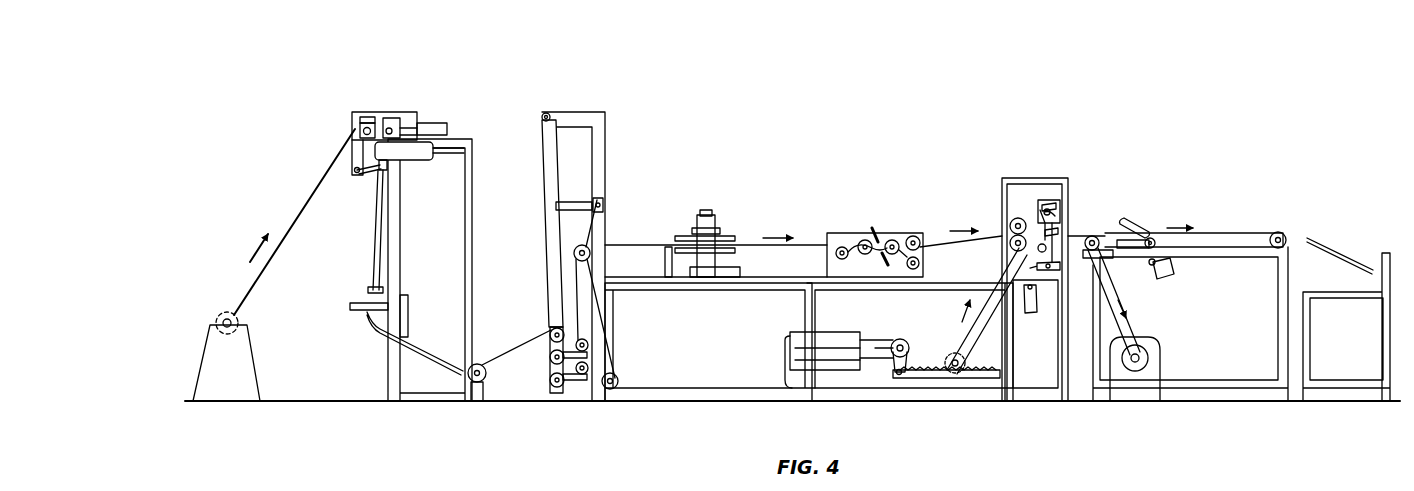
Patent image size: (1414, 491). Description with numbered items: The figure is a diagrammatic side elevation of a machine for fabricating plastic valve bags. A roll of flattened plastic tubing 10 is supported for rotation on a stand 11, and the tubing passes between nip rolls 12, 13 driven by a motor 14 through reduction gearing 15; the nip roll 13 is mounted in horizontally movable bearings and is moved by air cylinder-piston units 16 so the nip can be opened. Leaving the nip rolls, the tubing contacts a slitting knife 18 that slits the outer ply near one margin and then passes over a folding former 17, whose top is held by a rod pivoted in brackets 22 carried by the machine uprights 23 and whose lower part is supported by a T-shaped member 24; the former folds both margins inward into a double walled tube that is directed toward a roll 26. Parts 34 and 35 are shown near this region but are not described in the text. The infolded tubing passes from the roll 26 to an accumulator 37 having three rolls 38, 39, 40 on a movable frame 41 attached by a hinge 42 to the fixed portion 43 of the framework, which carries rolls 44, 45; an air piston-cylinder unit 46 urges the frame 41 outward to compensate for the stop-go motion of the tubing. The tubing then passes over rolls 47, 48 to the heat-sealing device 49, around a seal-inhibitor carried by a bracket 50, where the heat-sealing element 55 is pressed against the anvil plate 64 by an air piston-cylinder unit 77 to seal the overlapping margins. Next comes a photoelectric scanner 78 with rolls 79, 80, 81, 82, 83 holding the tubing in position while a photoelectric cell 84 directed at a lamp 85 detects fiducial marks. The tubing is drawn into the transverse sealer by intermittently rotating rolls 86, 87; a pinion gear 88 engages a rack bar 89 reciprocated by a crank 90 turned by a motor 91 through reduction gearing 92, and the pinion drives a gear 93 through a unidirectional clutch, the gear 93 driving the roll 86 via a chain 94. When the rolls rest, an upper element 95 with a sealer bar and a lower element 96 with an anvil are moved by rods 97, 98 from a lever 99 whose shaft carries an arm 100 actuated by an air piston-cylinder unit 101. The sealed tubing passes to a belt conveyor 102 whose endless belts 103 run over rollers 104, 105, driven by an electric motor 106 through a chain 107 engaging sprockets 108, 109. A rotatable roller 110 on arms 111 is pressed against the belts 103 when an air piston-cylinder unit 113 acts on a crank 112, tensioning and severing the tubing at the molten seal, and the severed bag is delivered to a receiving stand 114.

The roll of flattened plastic tubing 10 is at (224, 318).
The stand 11 is at (213, 360).
The nip roll 12 is at (357, 128).
The nip roll 13 is at (380, 125).
The motor 14 is at (413, 160).
The reduction gearing 15 is at (360, 150).
The air cylinder-piston units 16 is at (432, 123).
The folding former 17 is at (373, 240).
The slitting knife 18 is at (372, 170).
The brackets 22 is at (386, 168).
The machine uprights 23 is at (400, 245).
The T-shaped member 24 is at (368, 289).
The roll 26 is at (482, 366).
The drive rod 34 is at (410, 335).
The guide plate 35 is at (408, 310).
The accumulator 37 is at (582, 112).
The roll 38 is at (550, 341).
The roll 39 is at (552, 362).
The roll 40 is at (557, 387).
The movable frame 41 is at (547, 162).
The hinge 42 is at (546, 113).
The fixed portion of the framework 43 is at (605, 160).
The roll 44 is at (583, 374).
The roll 45 is at (578, 343).
The air piston-cylinder unit 46 is at (585, 205).
The roll 47 is at (619, 380).
The roll 48 is at (585, 247).
The heat-sealing device 49 is at (705, 214).
The bracket 50 is at (665, 262).
The heat-sealing element 55 is at (722, 240).
The anvil plate 64 is at (735, 250).
The air piston-cylinder unit 77 is at (715, 228).
The photoelectric scanner 78 is at (850, 222).
The rotatable roll 79 is at (836, 255).
The rotatable roll 80 is at (865, 240).
The rotatable roll 81 is at (893, 240).
The rotatable roll 82 is at (914, 237).
The rotatable roll 83 is at (920, 263).
The photoelectric cell 84 is at (875, 230).
The lamp 85 is at (885, 265).
The intermittently rotating roll 86 is at (1009, 240).
The intermittently rotating roll 87 is at (1010, 220).
The pinion gear 88 is at (948, 358).
The rack bar 89 is at (998, 378).
The crank 90 is at (898, 378).
The motor 91 is at (790, 345).
The reduction gearing 92 is at (900, 339).
The gear 93 is at (966, 362).
The chain 94 is at (976, 300).
The upper element 95 is at (1041, 205).
The lower element 96 is at (1030, 207).
The rod 97 is at (1062, 212).
The rod 98 is at (1044, 252).
The lever 99 is at (1055, 272).
The arm 100 is at (1036, 295).
The air piston-cylinder unit 101 is at (1030, 324).
The belt conveyor 102 is at (1215, 226).
The endless belts 103 is at (1268, 233).
The roller 104 is at (1300, 240).
The roller 105 is at (1094, 236).
The electric motor 106 is at (1156, 365).
The chain 107 is at (1112, 368).
The sprocket 108 is at (1125, 240).
The sprocket 109 is at (1135, 372).
The rotatable roller 110 is at (1135, 226).
The arms 111 is at (1152, 238).
The crank 112 is at (1105, 266).
The air piston-cylinder unit 113 is at (1174, 272).
The receiving stand 114 is at (1383, 255).